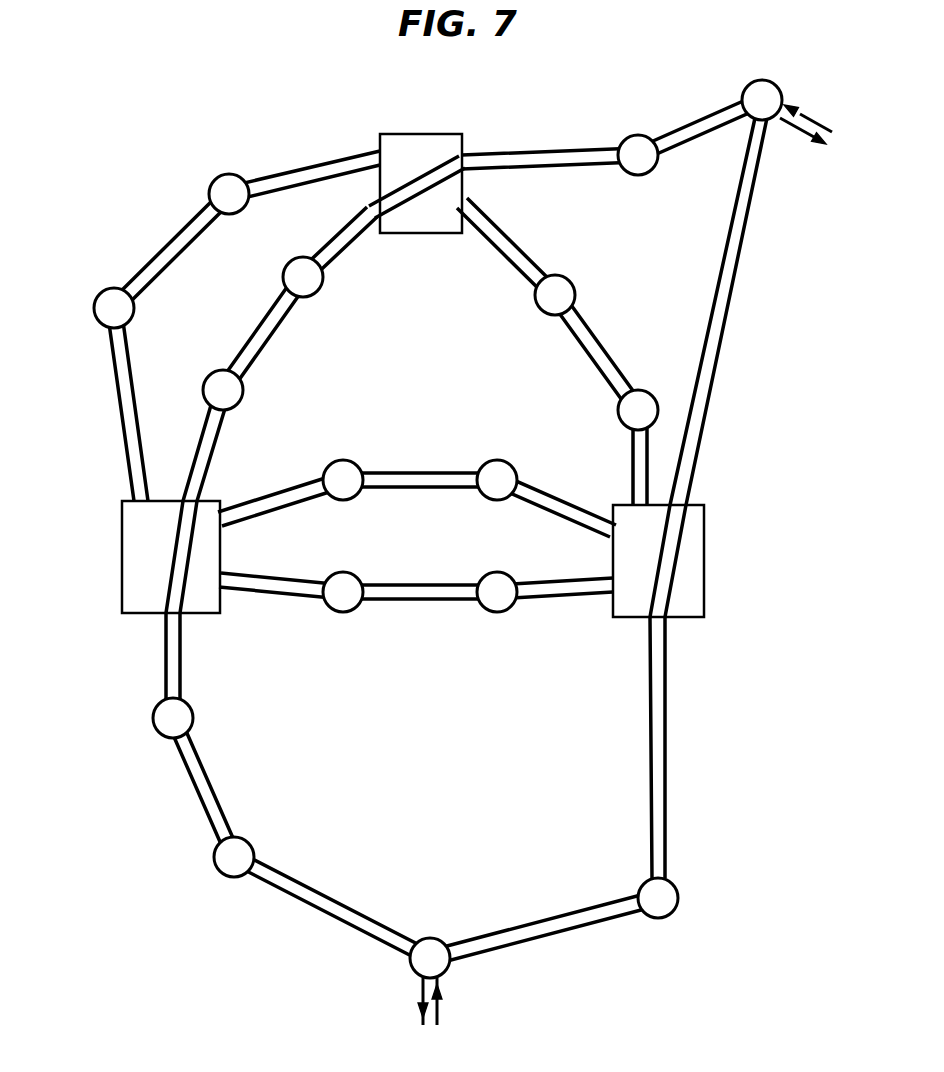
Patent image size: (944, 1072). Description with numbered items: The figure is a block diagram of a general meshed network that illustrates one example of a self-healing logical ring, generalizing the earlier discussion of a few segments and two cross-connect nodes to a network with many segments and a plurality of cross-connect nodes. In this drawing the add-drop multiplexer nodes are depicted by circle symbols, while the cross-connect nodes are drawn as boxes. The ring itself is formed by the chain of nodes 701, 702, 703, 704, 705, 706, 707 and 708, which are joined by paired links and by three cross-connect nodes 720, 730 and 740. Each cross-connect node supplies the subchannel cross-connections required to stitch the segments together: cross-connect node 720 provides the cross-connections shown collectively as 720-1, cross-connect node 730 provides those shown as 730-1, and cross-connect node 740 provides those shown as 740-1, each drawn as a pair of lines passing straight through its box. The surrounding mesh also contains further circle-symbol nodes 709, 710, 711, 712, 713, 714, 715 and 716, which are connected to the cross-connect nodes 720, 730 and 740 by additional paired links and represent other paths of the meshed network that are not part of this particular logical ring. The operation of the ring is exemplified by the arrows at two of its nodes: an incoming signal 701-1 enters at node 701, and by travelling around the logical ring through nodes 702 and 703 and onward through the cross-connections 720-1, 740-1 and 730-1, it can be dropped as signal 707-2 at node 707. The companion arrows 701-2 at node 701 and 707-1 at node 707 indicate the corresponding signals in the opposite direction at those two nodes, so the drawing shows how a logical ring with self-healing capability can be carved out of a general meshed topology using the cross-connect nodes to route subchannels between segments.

The ADM node 701 is at (437, 940).
The incoming signal 701-1 is at (477, 1007).
The outgoing link 701-2 is at (390, 1007).
The ADM node 702 is at (252, 840).
The ADM node 703 is at (188, 708).
The ADM node 704 is at (243, 395).
The ADM node 705 is at (320, 290).
The ADM node 706 is at (640, 175).
The ADM node 707 is at (770, 82).
The incoming link 707-1 is at (834, 111).
The dropped signal 707-2 is at (813, 148).
The ADM node 708 is at (680, 890).
The network node 709 is at (345, 612).
The network node 710 is at (500, 612).
The network node 711 is at (348, 500).
The network node 712 is at (492, 500).
The network node 713 is at (617, 412).
The network node 714 is at (575, 290).
The network node 715 is at (102, 292).
The network node 716 is at (228, 174).
The cross-connect node 720 is at (122, 562).
The subchannel cross-connections 720-1 is at (180, 576).
The cross-connect node 730 is at (704, 582).
The subchannel cross-connections 730-1 is at (678, 536).
The cross-connect node 740 is at (437, 134).
The subchannel cross-connections 740-1 is at (410, 178).